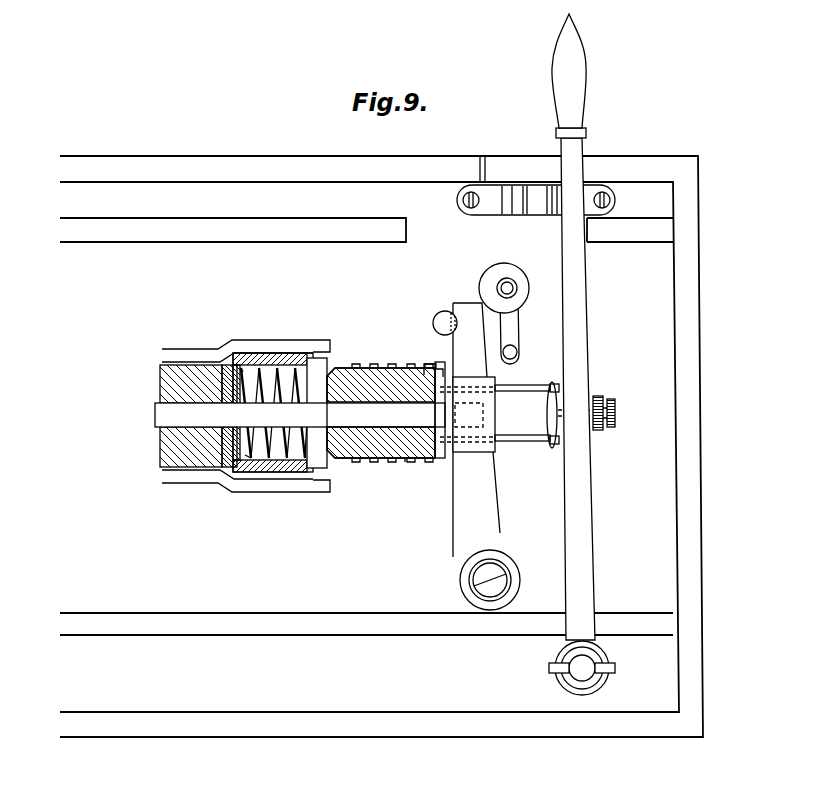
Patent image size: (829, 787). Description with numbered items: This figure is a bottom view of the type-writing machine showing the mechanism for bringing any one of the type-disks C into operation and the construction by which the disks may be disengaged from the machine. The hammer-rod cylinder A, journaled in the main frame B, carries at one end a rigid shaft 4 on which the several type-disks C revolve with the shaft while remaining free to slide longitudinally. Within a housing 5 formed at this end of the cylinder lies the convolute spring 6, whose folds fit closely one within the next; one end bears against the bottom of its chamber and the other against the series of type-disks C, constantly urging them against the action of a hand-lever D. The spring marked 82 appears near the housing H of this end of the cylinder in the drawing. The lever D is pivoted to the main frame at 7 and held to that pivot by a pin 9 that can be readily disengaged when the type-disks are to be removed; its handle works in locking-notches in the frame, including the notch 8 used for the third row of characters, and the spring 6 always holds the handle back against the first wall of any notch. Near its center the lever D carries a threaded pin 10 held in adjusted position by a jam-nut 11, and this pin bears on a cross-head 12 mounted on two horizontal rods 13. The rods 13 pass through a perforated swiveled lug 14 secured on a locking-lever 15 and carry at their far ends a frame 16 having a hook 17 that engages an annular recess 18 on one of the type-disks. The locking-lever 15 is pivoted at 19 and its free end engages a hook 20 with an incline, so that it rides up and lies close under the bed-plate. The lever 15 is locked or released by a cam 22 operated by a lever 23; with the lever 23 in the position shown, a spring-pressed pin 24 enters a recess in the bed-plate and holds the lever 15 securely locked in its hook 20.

The shaft 4 is at (300, 415).
The housing 5 is at (269, 413).
The spring 6 is at (274, 413).
The pivot 7 is at (582, 668).
The notch 8 is at (532, 212).
The pin 9 is at (616, 668).
The threaded pin 10 is at (615, 413).
The jam-nut 11 is at (600, 395).
The cross-head 12 is at (552, 415).
The horizontal rods 13 is at (522, 404).
The perforated swiveled lug 14 is at (469, 452).
The locking-lever 15 is at (476, 430).
The frame 16 is at (440, 460).
The hook 17 is at (432, 363).
The annular recess 18 is at (418, 462).
The pivot of locking-lever 19 is at (470, 580).
The hook 20 is at (438, 316).
The cam 22 is at (480, 275).
The lever 23 is at (521, 330).
The pin 24 is at (520, 352).
The spring 82 is at (288, 352).
The hammer-rod cylinder A is at (187, 416).
The main frame B is at (381, 446).
The type-disks C is at (381, 423).
The hand-lever D is at (584, 122).
The housing H is at (246, 415).